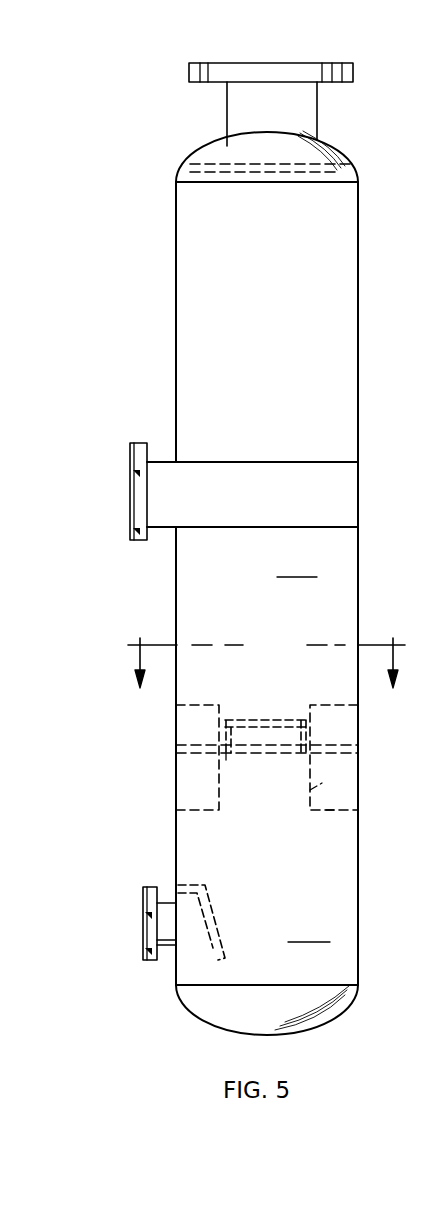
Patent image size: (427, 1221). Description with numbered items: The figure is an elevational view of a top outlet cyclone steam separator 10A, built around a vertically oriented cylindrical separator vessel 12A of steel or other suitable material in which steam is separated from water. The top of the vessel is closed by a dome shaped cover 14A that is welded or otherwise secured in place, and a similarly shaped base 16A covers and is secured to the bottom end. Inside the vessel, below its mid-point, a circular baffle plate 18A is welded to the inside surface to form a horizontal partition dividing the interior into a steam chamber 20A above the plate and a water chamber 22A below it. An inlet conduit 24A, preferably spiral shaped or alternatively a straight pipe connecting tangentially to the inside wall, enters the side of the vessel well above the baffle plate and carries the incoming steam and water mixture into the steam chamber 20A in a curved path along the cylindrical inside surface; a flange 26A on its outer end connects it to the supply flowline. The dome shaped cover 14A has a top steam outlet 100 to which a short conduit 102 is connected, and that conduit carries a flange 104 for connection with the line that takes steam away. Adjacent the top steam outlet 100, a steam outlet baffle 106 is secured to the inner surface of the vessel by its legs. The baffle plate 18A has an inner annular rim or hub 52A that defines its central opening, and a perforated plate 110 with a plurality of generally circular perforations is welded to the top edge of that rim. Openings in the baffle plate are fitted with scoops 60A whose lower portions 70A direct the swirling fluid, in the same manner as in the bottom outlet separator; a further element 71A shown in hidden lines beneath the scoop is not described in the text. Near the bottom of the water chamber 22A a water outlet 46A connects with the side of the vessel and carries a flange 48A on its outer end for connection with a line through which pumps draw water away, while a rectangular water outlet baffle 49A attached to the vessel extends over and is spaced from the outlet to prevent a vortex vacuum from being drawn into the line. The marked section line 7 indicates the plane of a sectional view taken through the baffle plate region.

The top outlet cyclone steam separator 10A is at (167, 293).
The cylindrical separator vessel 12A is at (200, 600).
The dome shaped cover 14A is at (230, 150).
The base 16A is at (243, 1010).
The baffle plate 18A is at (277, 750).
The steam chamber 20A is at (297, 566).
The water chamber 22A is at (309, 931).
The inlet conduit 24A is at (213, 473).
The flange 26A is at (138, 443).
The water outlet 46A is at (166, 907).
The flange 48A is at (148, 905).
The water outlet baffle 49A is at (213, 948).
The inner annular rim or hub 52A is at (230, 757).
The scoops 60A is at (198, 703).
The lower portions of scoops 70A is at (320, 787).
The drain 71A is at (332, 810).
The top steam outlet 100 is at (297, 142).
The short conduit 102 is at (235, 105).
The flange 104 is at (223, 70).
The steam outlet baffle 106 is at (256, 171).
The perforated plate 110 is at (277, 718).
The section line 7- 7 is at (266, 677).